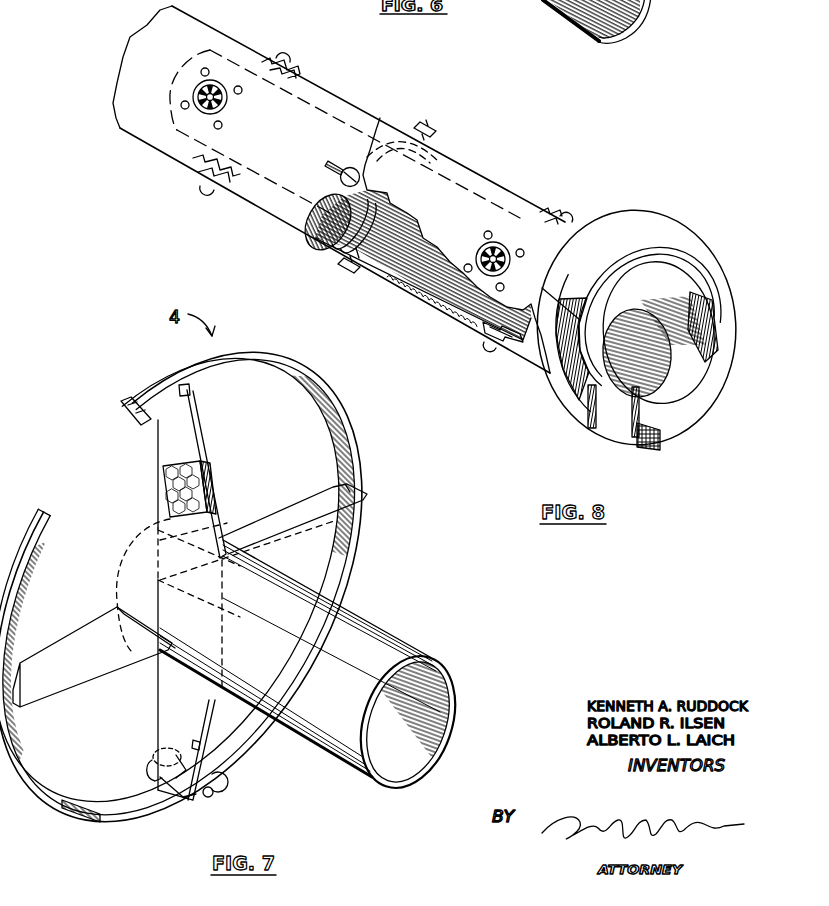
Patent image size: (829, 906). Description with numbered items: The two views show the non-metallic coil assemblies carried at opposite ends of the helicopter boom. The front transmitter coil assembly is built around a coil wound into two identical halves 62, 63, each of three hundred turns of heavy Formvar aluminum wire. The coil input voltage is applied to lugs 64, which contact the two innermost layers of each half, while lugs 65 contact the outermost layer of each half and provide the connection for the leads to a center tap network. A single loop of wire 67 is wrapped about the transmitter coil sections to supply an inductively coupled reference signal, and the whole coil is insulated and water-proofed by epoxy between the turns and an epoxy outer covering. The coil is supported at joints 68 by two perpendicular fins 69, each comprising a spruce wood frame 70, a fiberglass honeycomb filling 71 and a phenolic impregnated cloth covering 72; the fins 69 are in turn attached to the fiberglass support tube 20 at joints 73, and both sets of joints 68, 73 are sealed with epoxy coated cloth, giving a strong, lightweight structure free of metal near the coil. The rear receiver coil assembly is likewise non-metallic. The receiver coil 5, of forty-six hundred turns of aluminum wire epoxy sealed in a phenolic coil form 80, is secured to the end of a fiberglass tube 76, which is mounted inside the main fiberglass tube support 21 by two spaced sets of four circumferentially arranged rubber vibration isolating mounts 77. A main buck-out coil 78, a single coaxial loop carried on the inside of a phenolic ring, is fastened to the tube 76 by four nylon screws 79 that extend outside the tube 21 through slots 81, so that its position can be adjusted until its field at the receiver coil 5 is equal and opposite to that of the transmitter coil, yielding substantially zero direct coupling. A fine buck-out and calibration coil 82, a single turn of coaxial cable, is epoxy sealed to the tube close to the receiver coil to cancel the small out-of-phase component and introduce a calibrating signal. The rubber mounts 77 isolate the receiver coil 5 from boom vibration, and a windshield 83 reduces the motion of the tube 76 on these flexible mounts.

In FIG. 8, the receiver coil 5 is at (686, 250).
In FIG. 7, the fiberglass support tube 20 is at (398, 636).
In FIG. 8, the main fiberglass tube support 21 is at (212, 20).
In FIG. 7, the coil half 62 is at (126, 410).
In FIG. 7, the coil half 63 is at (160, 414).
In FIG. 7, the lugs 64 is at (152, 770).
In FIG. 7, the lugs 65 is at (183, 753).
In FIG. 7, the single loop of wire 67 is at (153, 394).
In FIG. 7, the joints 68 is at (328, 488).
In FIG. 7, the fins 69 is at (114, 703).
In FIG. 7, the spruce wood frame 70 is at (214, 498).
In FIG. 7, the fiberglass honeycomb filling 71 is at (214, 471).
In FIG. 7, the phenolic impregnated cloth covering 72 is at (170, 455).
In FIG. 7, the joints 73 is at (118, 606).
In FIG. 8, the fiberglass tube 76 is at (320, 232).
In FIG. 8, the rubber vibration isolating mounts 77 is at (288, 58).
In FIG. 8, the main buck-out coil 78 is at (378, 152).
In FIG. 8, the nylon screws 79 is at (348, 167).
In FIG. 8, the phenolic coil form 80 is at (683, 420).
In FIG. 8, the slots 81 is at (326, 172).
In FIG. 8, the fine buck-out and calibration coil 82 is at (585, 372).
In FIG. 8, the windshield 83 is at (660, 230).